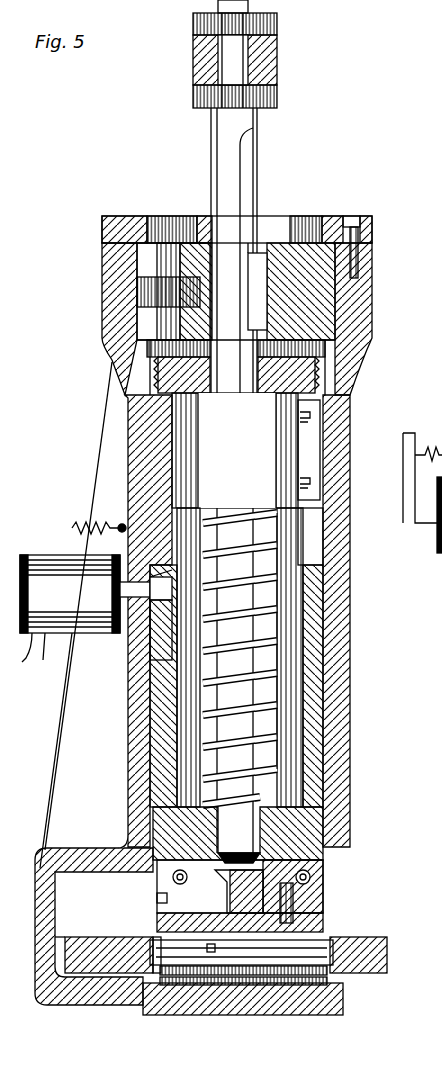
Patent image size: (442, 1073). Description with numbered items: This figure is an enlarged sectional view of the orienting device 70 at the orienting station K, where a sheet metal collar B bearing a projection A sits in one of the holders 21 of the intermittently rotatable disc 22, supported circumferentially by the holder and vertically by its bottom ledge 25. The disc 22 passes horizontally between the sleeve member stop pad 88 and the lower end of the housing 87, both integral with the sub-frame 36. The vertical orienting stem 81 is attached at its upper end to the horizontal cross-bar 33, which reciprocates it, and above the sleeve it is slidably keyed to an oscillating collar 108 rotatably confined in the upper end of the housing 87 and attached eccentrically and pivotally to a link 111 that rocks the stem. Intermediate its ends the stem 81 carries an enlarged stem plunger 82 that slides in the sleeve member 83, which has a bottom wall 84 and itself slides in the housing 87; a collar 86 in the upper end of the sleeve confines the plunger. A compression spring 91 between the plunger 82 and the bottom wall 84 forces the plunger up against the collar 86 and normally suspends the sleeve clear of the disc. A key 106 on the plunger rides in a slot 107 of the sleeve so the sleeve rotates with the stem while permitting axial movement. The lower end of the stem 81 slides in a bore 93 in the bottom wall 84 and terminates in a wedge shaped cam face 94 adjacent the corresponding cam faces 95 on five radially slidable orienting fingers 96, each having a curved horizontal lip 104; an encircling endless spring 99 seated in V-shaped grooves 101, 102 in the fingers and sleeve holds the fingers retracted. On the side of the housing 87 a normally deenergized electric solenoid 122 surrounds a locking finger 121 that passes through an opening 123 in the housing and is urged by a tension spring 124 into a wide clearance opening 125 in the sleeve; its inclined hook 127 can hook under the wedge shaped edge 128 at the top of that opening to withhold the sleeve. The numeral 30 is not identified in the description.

The horizontal cross-bar 33 is at (262, 62).
The orienting stem 81 is at (214, 143).
The orienting station K is at (315, 205).
The orienting device 70 is at (376, 226).
The link 111 is at (150, 291).
The oscillating collar 108 is at (312, 300).
The collar 86 is at (320, 376).
The stem plunger 82 is at (232, 449).
The key 106 is at (310, 432).
The slot 107 is at (308, 528).
The sleeve member 83 is at (310, 592).
The housing 87 is at (340, 648).
The compression spring 91 is at (268, 692).
The electric solenoid 122 is at (45, 570).
The tension spring 124 is at (82, 522).
The wedge shaped edge 128 is at (162, 566).
The opening 123 is at (120, 589).
The locking finger 121 is at (150, 597).
The inclined hook 127 is at (162, 612).
The wide clearance opening 125 is at (160, 655).
The bottom wall 84 is at (295, 832).
The sub-frame 36 is at (64, 848).
The bore 93 is at (245, 882).
The cam face 94 is at (240, 856).
The cam faces 95 is at (213, 868).
The orienting fingers 96 is at (183, 903).
The endless spring 99 is at (172, 878).
The V-shaped groove 102 is at (314, 878).
The V-shaped groove 101 is at (165, 884).
The curved horizontal lip 104 is at (160, 900).
The disc 22 is at (82, 963).
The holders 21 is at (112, 972).
The bottom ledges 25 is at (150, 950).
The sheet metal collar B is at (305, 958).
The projection A is at (212, 955).
The sleeve member stop pad 88 is at (292, 996).
The adjacent element 30 is at (422, 606).